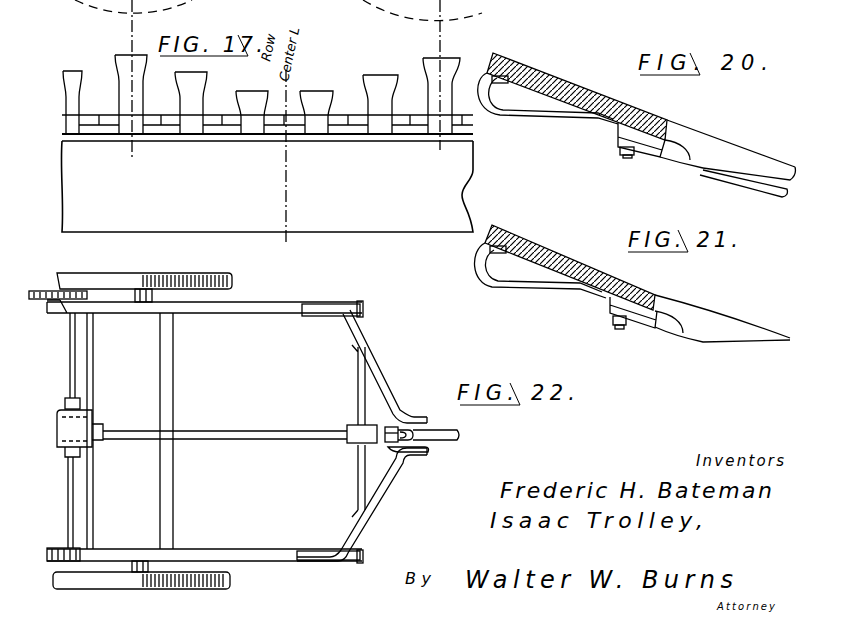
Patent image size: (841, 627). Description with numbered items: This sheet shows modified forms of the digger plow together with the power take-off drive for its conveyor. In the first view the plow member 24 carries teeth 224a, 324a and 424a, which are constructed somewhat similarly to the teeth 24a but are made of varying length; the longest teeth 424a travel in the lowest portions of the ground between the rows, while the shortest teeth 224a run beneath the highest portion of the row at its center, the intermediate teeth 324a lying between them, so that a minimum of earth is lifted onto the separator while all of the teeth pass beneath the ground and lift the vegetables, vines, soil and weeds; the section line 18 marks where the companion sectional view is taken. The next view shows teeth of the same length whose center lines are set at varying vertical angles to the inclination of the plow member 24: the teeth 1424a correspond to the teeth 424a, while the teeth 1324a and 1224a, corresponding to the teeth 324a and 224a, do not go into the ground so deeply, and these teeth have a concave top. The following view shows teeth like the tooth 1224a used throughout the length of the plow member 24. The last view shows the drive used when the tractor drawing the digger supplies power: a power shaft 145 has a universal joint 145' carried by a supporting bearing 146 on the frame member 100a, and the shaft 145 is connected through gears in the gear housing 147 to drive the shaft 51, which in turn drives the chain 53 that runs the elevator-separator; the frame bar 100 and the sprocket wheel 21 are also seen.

In FIG. 17, the longest teeth 424a is at (435, 142).
In FIG. 17, the intermediate teeth 324a is at (378, 136).
In FIG. 17, the shortest teeth 224a is at (313, 132).
In FIG. 17, the teeth 24a is at (335, 217).
In FIG. 17, the section line 18- 18 is at (262, 73).
In FIG. 20, the plow member 24 is at (565, 82).
In FIG. 21, the plow member 24 is at (542, 248).
In FIG. 20, the tooth 1224a is at (718, 123).
In FIG. 21, the tooth 1224a is at (727, 333).
In FIG. 20, the tooth 1324a is at (752, 173).
In FIG. 20, the tooth 1424a is at (727, 180).
In FIG. 22, the sprocket wheel 21 is at (232, 282).
In FIG. 22, the chain 53 is at (58, 288).
In FIG. 22, the shaft 51 is at (70, 352).
In FIG. 22, the gear housing 147 is at (63, 427).
In FIG. 22, the power shaft 145 is at (311, 422).
In FIG. 22, the supporting bearing 146 is at (352, 422).
In FIG. 22, the universal joint 145' is at (431, 462).
In FIG. 22, the frame bar 100 is at (373, 356).
In FIG. 22, the frame member 100a is at (363, 476).